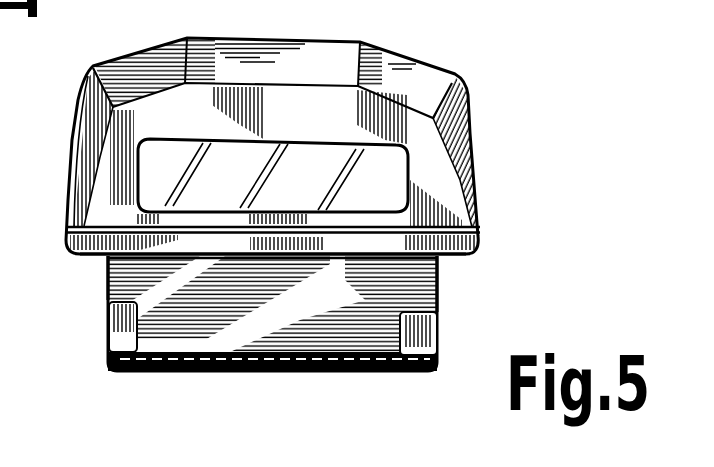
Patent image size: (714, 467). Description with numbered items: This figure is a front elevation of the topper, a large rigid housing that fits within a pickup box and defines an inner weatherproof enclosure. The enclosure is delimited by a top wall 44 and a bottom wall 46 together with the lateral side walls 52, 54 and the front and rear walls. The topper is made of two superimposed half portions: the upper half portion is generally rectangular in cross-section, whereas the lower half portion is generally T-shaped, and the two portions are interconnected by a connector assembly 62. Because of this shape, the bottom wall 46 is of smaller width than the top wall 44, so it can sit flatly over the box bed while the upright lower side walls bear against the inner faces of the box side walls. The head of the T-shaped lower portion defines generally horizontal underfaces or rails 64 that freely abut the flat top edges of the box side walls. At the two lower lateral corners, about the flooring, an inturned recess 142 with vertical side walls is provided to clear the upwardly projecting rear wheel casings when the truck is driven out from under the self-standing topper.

The top wall 44 is at (288, 37).
The lateral side wall 54 is at (75, 114).
The lateral side wall 52 is at (468, 110).
The connector assembly 62 is at (65, 228).
The horizontal underface 64 is at (457, 267).
The bottom wall 46 is at (148, 368).
The inturned recess 142 is at (408, 341).